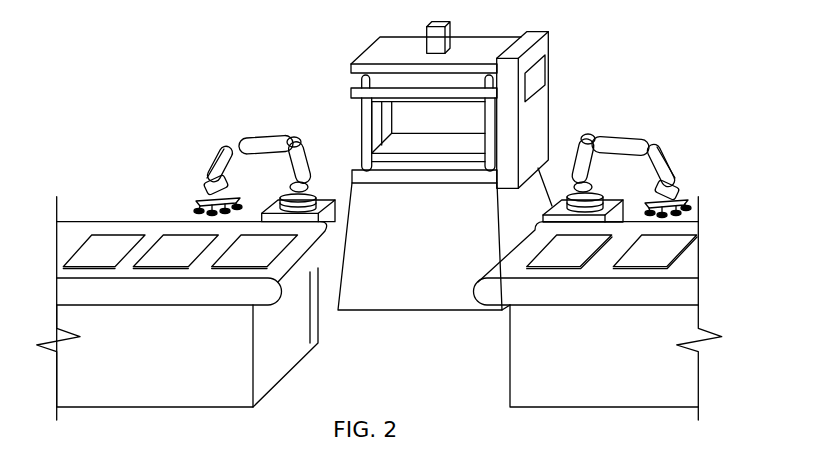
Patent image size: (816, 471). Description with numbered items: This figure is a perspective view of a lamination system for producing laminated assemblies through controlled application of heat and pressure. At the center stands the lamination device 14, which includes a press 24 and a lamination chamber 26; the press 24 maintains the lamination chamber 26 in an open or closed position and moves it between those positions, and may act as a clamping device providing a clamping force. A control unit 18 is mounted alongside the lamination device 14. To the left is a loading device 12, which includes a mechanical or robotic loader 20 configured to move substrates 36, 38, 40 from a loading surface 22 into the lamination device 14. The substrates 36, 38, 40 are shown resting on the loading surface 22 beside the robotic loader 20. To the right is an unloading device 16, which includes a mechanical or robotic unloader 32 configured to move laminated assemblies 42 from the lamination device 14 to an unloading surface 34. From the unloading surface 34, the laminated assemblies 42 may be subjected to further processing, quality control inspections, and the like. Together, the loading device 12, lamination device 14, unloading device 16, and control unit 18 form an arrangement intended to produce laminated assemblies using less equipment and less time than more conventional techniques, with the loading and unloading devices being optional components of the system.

The loading device 12 is at (220, 127).
The lamination device 14 is at (328, 47).
The unloading device 16 is at (660, 88).
The control unit 18 is at (542, 45).
The robotic loader 20 is at (260, 142).
The loading surface 22 is at (315, 243).
The press 24 is at (380, 50).
The lamination chamber 26 is at (348, 112).
The robotic unloader 32 is at (622, 135).
The unloading surface 34 is at (500, 266).
The substrate 36 is at (116, 243).
The substrate 38 is at (173, 243).
The substrate 40 is at (255, 242).
The laminated assembly 42 is at (548, 253).